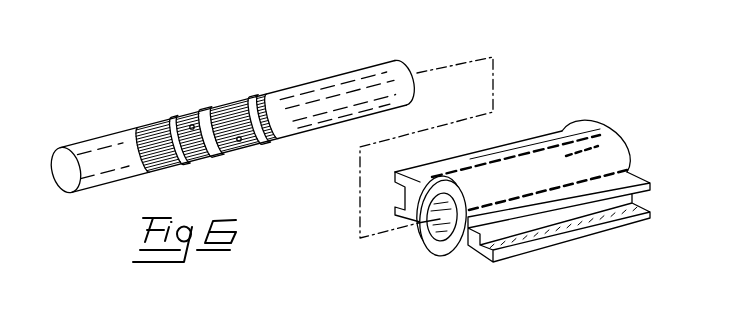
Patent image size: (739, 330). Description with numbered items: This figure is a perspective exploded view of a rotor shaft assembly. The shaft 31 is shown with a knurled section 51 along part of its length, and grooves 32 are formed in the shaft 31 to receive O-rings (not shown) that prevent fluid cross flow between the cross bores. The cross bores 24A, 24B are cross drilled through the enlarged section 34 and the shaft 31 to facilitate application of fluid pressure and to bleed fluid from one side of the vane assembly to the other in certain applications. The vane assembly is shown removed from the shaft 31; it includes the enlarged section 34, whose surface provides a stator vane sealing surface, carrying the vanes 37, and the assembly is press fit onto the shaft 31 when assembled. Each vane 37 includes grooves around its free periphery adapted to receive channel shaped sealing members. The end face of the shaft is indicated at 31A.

The shaft 31 is at (298, 95).
The shaft end face 31A is at (133, 130).
The grooves 32 is at (247, 101).
The knurled section 51 is at (258, 104).
The cross bore 24A is at (192, 130).
The cross bore 24B is at (243, 141).
The vane 37 is at (488, 160).
The enlarged section 34 is at (585, 152).